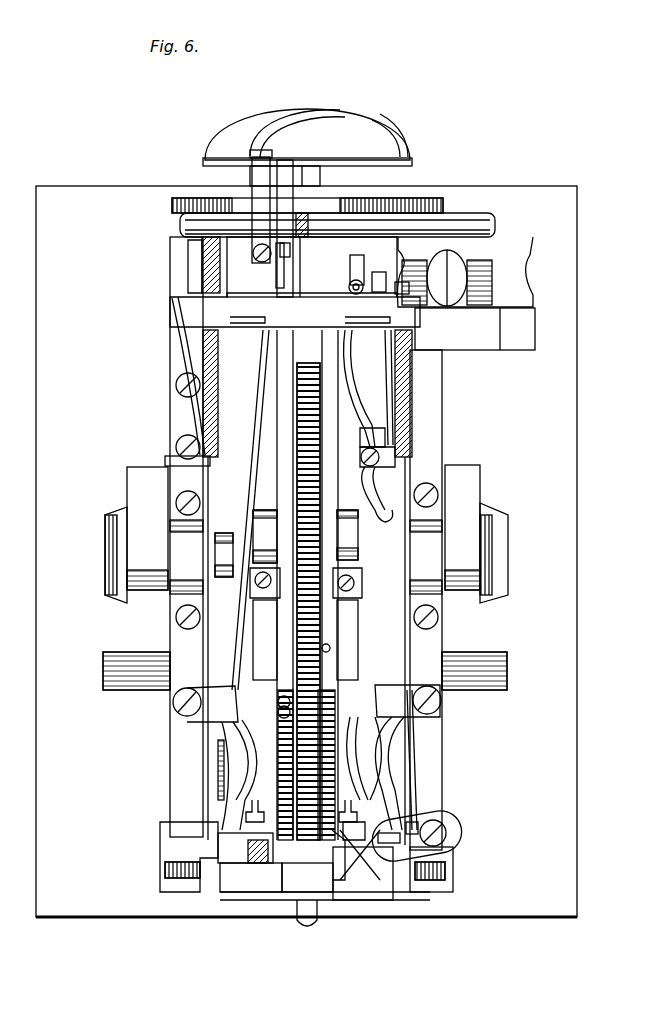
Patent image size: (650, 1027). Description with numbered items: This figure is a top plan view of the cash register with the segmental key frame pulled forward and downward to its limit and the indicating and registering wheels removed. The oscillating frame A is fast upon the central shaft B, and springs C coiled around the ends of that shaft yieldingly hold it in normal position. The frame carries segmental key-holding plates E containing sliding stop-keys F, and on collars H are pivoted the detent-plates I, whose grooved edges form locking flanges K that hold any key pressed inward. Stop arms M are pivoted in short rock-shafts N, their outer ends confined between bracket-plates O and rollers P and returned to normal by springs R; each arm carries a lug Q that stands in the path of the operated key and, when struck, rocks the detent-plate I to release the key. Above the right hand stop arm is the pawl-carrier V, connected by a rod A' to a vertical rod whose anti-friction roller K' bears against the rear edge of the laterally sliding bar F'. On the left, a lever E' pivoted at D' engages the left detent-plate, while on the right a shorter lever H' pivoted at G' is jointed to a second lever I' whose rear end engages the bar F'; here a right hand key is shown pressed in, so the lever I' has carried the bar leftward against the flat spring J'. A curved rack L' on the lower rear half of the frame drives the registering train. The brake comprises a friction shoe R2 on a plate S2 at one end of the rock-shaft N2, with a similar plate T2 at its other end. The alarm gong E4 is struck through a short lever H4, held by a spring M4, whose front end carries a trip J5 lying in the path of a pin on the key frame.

The alarm gong E4 is at (307, 147).
The spring M4 is at (258, 205).
The striker lever H4 is at (290, 214).
The rock-shaft N2 is at (182, 226).
The plate T2 is at (196, 256).
The trip J5 is at (279, 272).
The oscillating frame A is at (312, 267).
The anti-friction roller K' is at (379, 285).
The plate S2 is at (480, 262).
The friction shoe R2 is at (475, 329).
The laterally sliding bar F' is at (295, 310).
The flat spring J' is at (173, 381).
The lever E' is at (313, 526).
The curved rack L' is at (307, 585).
The rod A' is at (414, 580).
The second lever I' is at (393, 475).
The springs C is at (306, 534).
The central shaft B is at (224, 540).
The collars H is at (306, 541).
The detent-frames or plates I is at (305, 746).
The rock-shafts N is at (140, 665).
The vertical pivot D' is at (171, 704).
The pivot G' is at (442, 700).
The lever H' is at (413, 773).
The stop arms M is at (386, 790).
The springs R is at (220, 762).
The lug Q is at (250, 824).
The pawl-carrier V is at (448, 828).
The bracket-plates O is at (165, 836).
The disks or rollers P is at (168, 866).
The locking flanges K is at (245, 848).
The stop-keys F is at (325, 878).
The segmental key-holding plates E is at (310, 883).